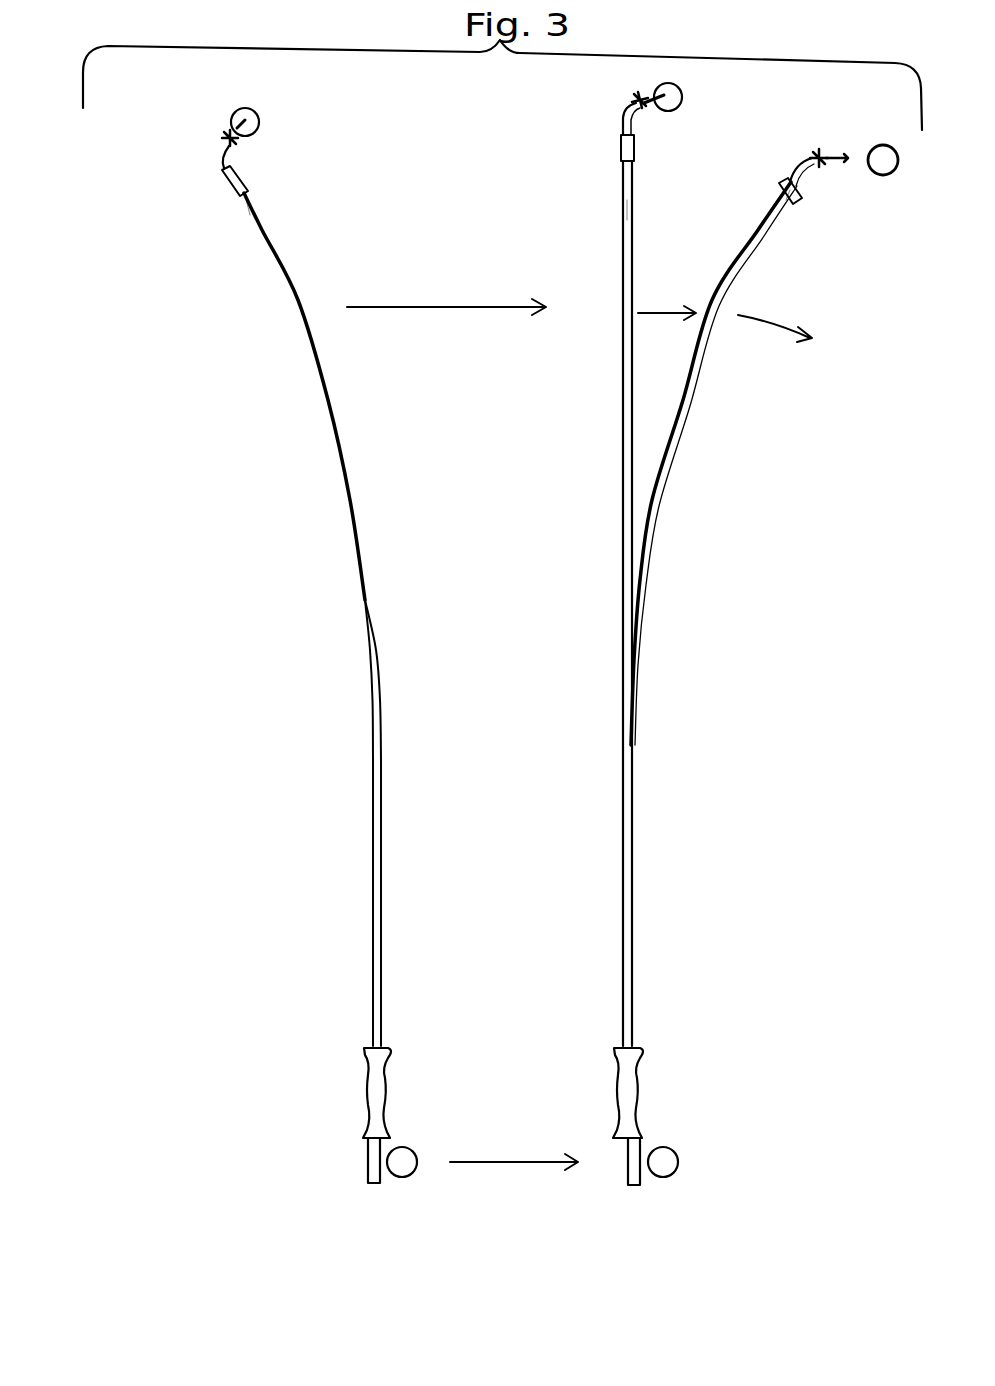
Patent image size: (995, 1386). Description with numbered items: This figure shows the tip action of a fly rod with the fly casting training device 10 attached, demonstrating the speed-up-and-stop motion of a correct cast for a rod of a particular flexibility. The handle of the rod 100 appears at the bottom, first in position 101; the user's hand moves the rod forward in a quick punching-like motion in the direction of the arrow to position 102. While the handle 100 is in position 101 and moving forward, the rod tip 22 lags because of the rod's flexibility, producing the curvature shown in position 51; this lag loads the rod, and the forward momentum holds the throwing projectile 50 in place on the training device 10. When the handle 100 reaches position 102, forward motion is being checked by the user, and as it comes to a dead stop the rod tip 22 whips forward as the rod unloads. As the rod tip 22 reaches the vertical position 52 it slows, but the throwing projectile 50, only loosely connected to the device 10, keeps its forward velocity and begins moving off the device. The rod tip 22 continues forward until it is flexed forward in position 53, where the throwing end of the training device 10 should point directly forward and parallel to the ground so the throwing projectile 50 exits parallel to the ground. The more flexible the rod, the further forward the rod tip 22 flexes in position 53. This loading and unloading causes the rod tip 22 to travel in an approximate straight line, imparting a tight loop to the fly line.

The fly casting training device 10 is at (204, 84).
The rod tip 22 is at (218, 170).
The throwing projectile 50 is at (258, 135).
The rod position 51 is at (275, 252).
The vertical rod position 52 is at (633, 252).
The forward flexed rod position 53 is at (745, 245).
The handle of the rod 100 is at (365, 1106).
The handle position 101 is at (372, 1185).
The handle position 102 is at (638, 1188).